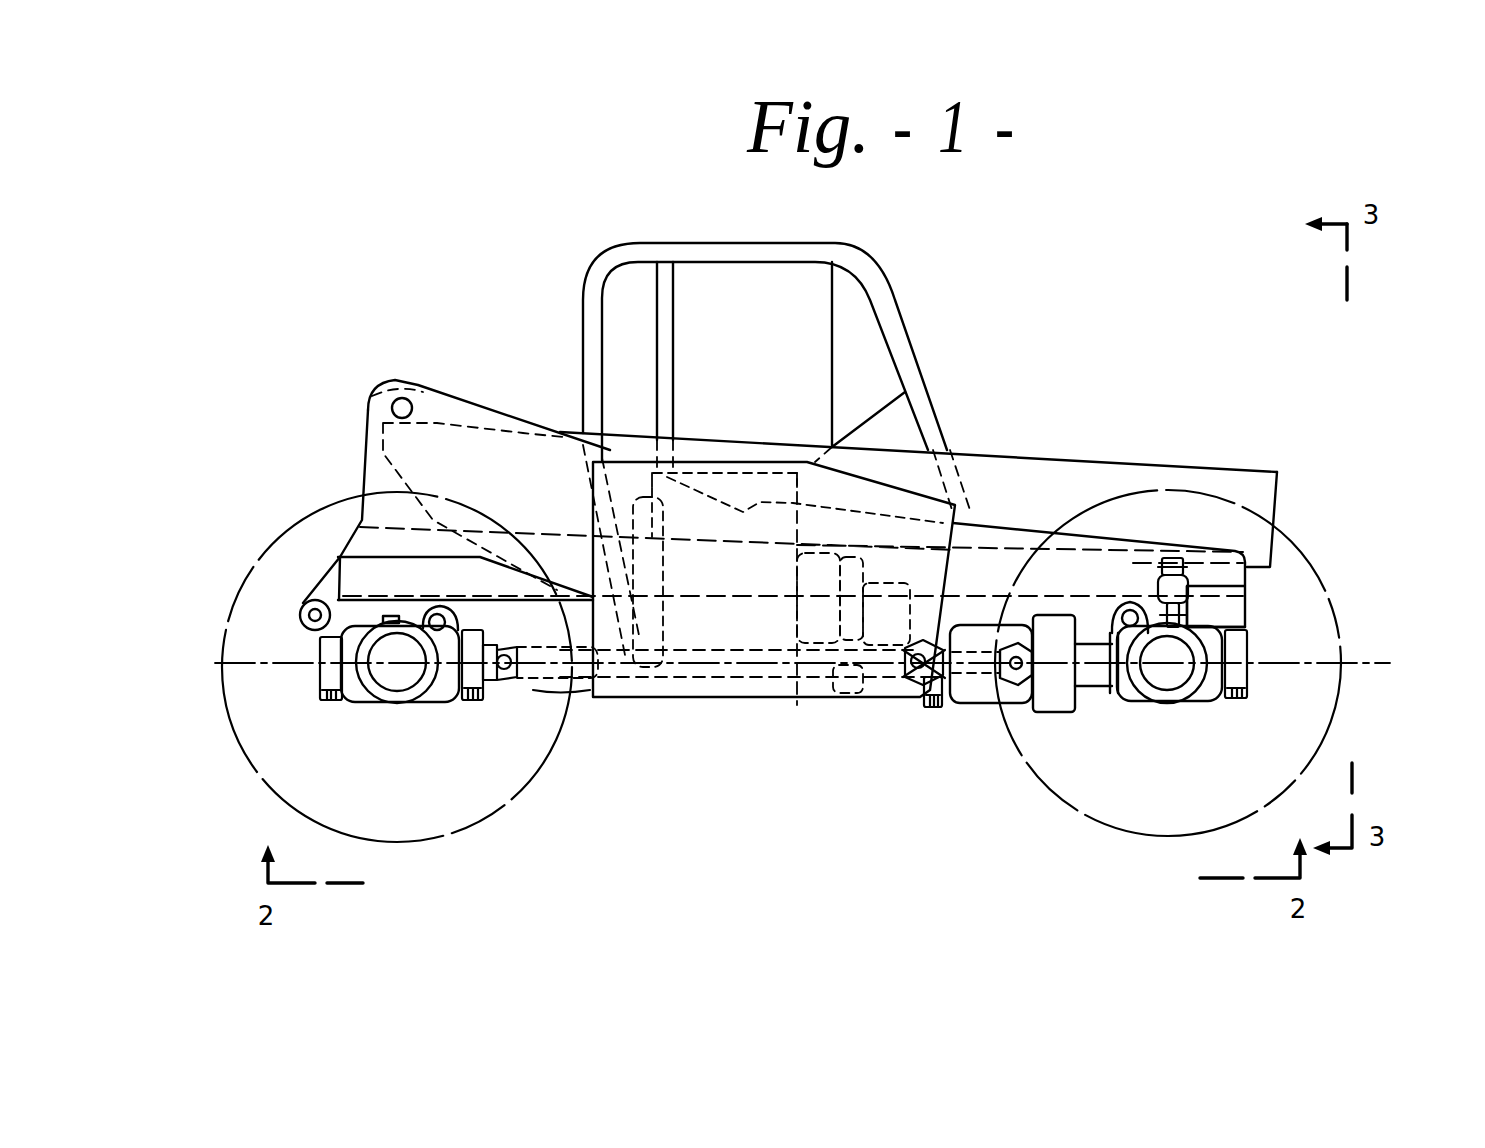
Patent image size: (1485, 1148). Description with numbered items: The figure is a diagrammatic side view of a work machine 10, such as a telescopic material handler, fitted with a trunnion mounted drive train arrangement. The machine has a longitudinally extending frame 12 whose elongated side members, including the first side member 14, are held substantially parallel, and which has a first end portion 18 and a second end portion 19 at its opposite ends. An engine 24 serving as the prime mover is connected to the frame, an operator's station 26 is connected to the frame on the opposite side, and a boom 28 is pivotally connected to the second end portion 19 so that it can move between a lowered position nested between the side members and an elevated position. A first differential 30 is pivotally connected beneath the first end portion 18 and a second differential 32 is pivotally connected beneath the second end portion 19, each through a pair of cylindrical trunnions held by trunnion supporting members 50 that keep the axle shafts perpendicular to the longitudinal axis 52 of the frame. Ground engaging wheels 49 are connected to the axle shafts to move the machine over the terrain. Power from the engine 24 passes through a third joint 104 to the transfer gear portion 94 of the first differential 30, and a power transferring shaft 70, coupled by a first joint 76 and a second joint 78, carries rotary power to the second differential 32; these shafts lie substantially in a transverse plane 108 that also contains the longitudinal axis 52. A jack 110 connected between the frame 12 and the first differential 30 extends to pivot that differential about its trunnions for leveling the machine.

The work machine 10 is at (1172, 192).
The frame 12 is at (1040, 525).
The first side member 14 is at (998, 547).
The first end portion 18 is at (1227, 613).
The second end portion 19 is at (360, 583).
The engine 24 is at (677, 637).
The operator's station 26 is at (703, 347).
The boom 28 is at (1275, 497).
The first differential 30 is at (1163, 703).
The second differential 32 is at (397, 703).
The ground engaging wheels 49 is at (510, 805).
The trunnion supporting members 50 is at (347, 628).
The longitudinal axis 52 is at (310, 680).
The power transferring shaft 70 is at (720, 683).
The first joint 76 is at (937, 647).
The second joint 78 is at (505, 683).
The transfer gear portion 94 is at (1060, 713).
The third joint 104 is at (1017, 690).
The plane 108 is at (1367, 665).
The jack 110 is at (1250, 587).